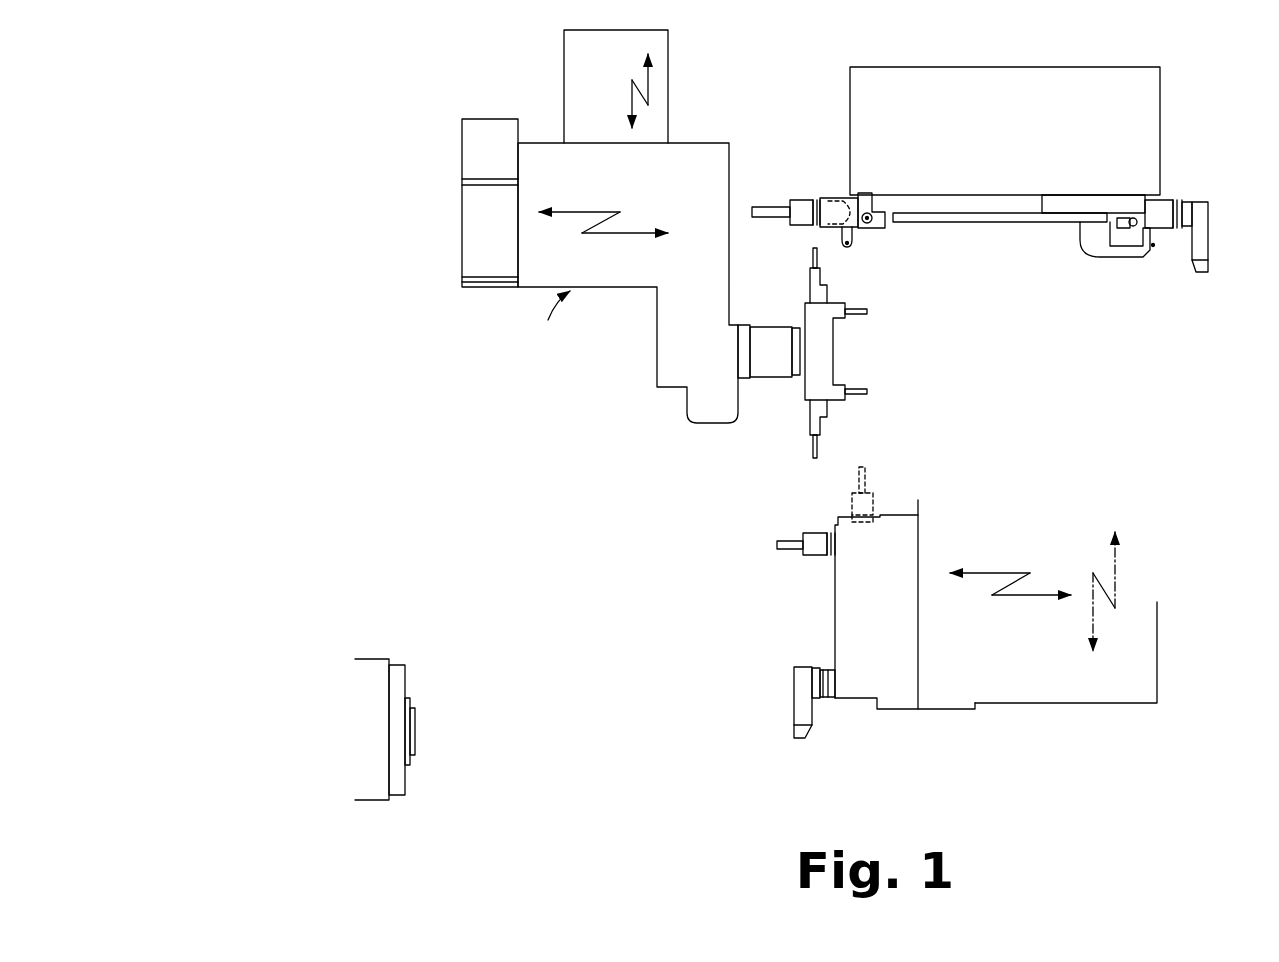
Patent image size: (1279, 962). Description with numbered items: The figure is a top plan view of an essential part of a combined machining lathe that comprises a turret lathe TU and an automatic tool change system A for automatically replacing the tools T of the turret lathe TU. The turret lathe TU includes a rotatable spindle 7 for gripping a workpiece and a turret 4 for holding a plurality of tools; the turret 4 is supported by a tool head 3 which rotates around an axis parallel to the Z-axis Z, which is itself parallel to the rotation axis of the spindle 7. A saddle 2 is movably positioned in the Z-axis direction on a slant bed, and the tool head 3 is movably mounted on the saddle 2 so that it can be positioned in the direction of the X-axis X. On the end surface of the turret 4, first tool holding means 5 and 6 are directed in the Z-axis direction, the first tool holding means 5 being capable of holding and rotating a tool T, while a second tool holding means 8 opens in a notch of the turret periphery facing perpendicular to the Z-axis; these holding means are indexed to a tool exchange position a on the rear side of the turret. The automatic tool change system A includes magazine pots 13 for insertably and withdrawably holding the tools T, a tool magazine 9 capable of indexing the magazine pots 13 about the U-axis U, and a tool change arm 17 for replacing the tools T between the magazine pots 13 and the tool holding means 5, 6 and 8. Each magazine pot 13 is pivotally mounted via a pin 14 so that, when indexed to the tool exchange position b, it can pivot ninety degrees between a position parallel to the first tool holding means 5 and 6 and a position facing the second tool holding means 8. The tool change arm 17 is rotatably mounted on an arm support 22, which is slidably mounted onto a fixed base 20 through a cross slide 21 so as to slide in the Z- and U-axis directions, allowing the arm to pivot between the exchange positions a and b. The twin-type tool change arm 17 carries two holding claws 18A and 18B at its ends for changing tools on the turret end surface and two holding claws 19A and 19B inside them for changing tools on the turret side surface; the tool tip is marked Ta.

The saddle 2 is at (188, 400).
The tool head 3 is at (1147, 698).
The turret 4 is at (903, 703).
The first tool holding means 5 is at (843, 565).
The first tool holding means 6 is at (827, 727).
The spindle 7 is at (400, 668).
The second tool holding means 8 is at (860, 525).
The tool magazine 9 is at (1162, 133).
The magazine pot 13 is at (853, 233).
The pin 14 is at (867, 212).
The tool change arm 17 is at (805, 390).
The holding claw 18A is at (820, 257).
The holding claw 18B is at (817, 443).
The holding claw 19A is at (860, 327).
The holding claw 19B is at (858, 385).
The fixed base 20 is at (494, 115).
The cross slide 21 is at (470, 187).
The arm support 22 is at (698, 145).
The tool T is at (797, 205).
The tool tip Ta is at (820, 200).
The turret lathe TU is at (718, 799).
The automatic tool change system A is at (1152, 330).
The tool exchange position a is at (883, 503).
The tool exchange position b is at (832, 178).
The U-axis U is at (625, 91).
The Z-axis Z is at (805, 395).
The X-axis X is at (1117, 591).